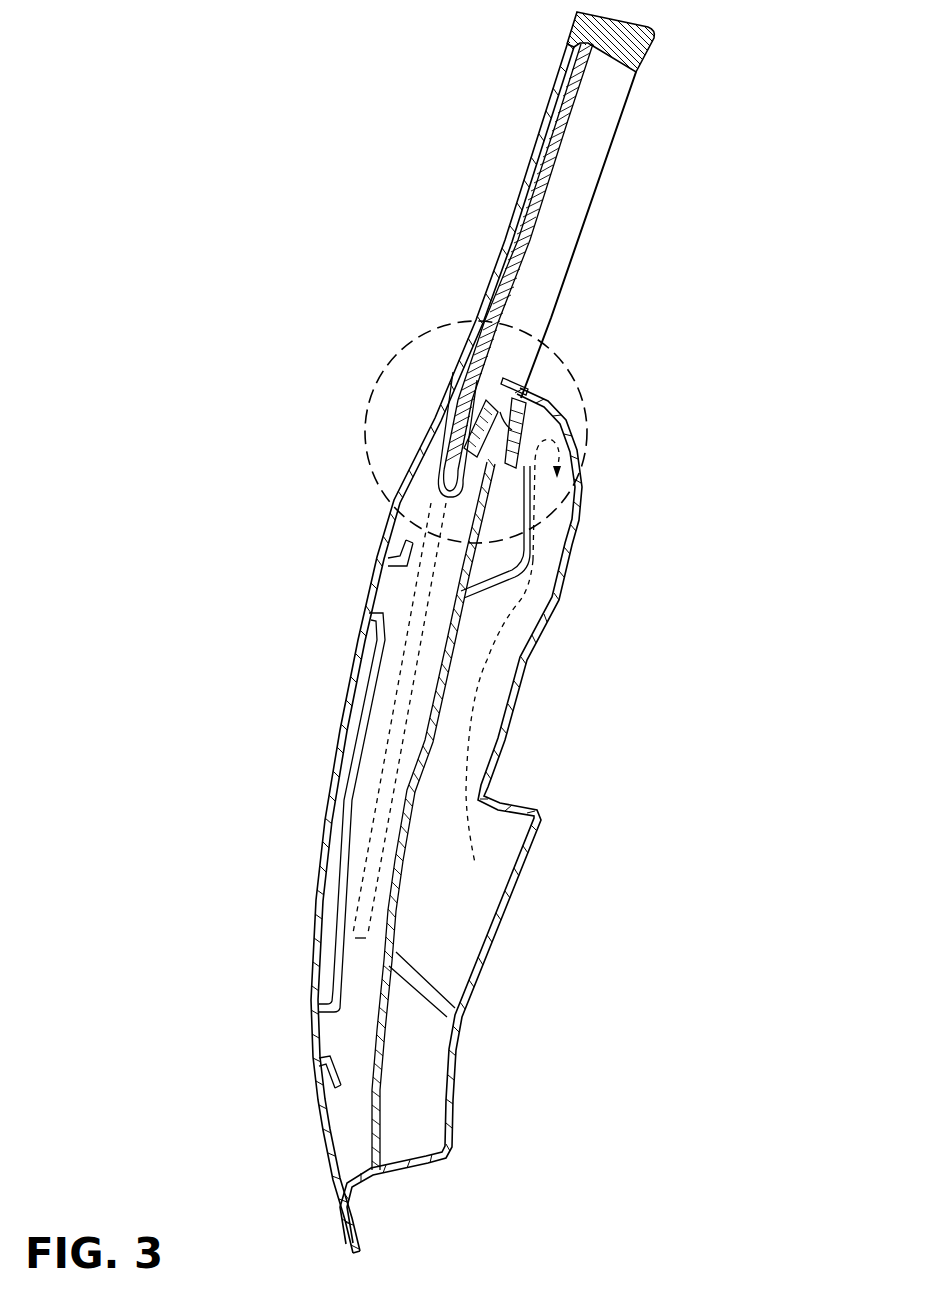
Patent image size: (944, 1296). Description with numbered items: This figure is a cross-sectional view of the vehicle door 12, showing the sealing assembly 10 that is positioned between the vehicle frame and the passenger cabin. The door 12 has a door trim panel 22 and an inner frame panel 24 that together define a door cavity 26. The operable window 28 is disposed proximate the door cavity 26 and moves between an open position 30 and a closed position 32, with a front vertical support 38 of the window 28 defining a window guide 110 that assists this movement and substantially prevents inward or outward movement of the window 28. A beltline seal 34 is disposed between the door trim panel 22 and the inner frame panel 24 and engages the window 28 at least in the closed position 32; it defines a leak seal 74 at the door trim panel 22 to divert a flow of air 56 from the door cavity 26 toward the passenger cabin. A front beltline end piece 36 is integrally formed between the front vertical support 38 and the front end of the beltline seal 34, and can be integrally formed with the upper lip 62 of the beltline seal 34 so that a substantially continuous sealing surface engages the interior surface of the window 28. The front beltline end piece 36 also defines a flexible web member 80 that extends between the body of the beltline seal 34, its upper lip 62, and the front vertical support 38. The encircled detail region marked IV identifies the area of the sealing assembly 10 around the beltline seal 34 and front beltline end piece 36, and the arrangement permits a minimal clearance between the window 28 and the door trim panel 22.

The sealing assembly 10 is at (519, 364).
The door 12 is at (257, 633).
The door trim panel 22 is at (580, 435).
The inner frame panel 24 is at (476, 513).
The door cavity 26 is at (474, 648).
The operable window 28 is at (540, 173).
The open position 30 is at (380, 735).
The closed position 32 is at (504, 229).
The beltline seal 34 is at (550, 418).
The front beltline end piece 36 is at (538, 408).
The front vertical support 38 is at (585, 142).
The flow of air 56 is at (533, 577).
The upper lip 62 is at (444, 426).
The leak seal 74 is at (510, 388).
The flexible web member 80 is at (500, 380).
The window guide 110 is at (578, 44).
The detail view IV is at (583, 392).